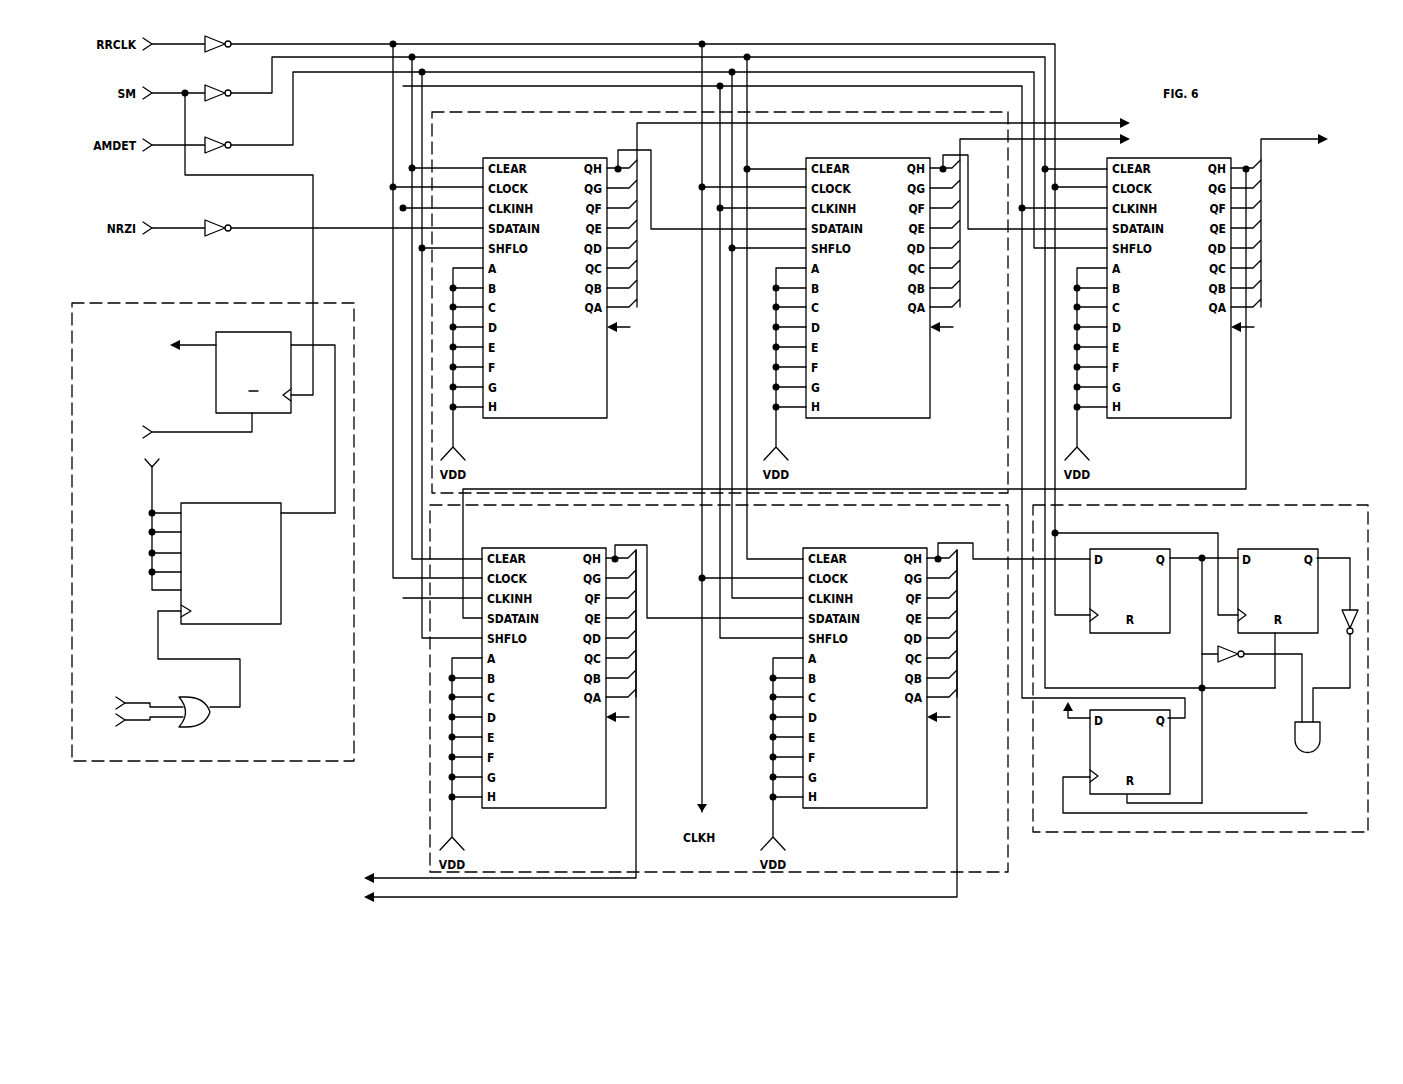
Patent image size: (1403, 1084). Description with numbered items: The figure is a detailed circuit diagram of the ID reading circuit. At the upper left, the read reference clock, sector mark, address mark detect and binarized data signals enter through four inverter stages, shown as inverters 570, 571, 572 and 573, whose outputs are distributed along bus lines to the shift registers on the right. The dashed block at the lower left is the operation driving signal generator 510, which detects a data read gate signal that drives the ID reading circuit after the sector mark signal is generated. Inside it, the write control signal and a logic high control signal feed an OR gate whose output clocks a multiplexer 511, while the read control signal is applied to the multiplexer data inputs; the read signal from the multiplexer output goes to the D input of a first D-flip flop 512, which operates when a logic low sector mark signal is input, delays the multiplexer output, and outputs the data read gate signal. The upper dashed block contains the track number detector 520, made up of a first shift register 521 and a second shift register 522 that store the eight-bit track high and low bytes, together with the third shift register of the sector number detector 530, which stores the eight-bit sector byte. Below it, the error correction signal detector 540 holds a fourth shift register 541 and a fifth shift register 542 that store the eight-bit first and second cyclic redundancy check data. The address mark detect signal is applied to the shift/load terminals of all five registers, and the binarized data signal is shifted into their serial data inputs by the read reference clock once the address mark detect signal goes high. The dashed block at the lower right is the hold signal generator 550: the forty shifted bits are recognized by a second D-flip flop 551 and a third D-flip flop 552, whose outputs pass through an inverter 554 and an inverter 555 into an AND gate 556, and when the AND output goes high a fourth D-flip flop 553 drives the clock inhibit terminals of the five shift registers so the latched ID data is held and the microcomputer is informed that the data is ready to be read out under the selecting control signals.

The operation driving signal generator 510 is at (133, 765).
The multiplexer 511 is at (220, 503).
The first D-flip flop 512 is at (272, 415).
The track number detector 520 is at (978, 112).
The first shift register 521 is at (540, 420).
The second shift register 522 is at (860, 420).
The sector number detector 530 is at (1157, 420).
The error correction signal detector 540 is at (430, 843).
The fourth shift register 541 is at (533, 810).
The fifth shift register 542 is at (850, 810).
The hold signal generator 550 is at (1110, 835).
The second D-flip flop 551 is at (1155, 549).
The third D-flip flop 552 is at (1283, 549).
The fourth D-flip flop 553 is at (1090, 757).
The inverter 554 is at (1213, 661).
The inverter 555 is at (1346, 635).
The AND gate 556 is at (1295, 746).
The inverter 570 is at (210, 50).
The inverter 571 is at (214, 99).
The inverter 572 is at (215, 150).
The inverter 573 is at (211, 221).